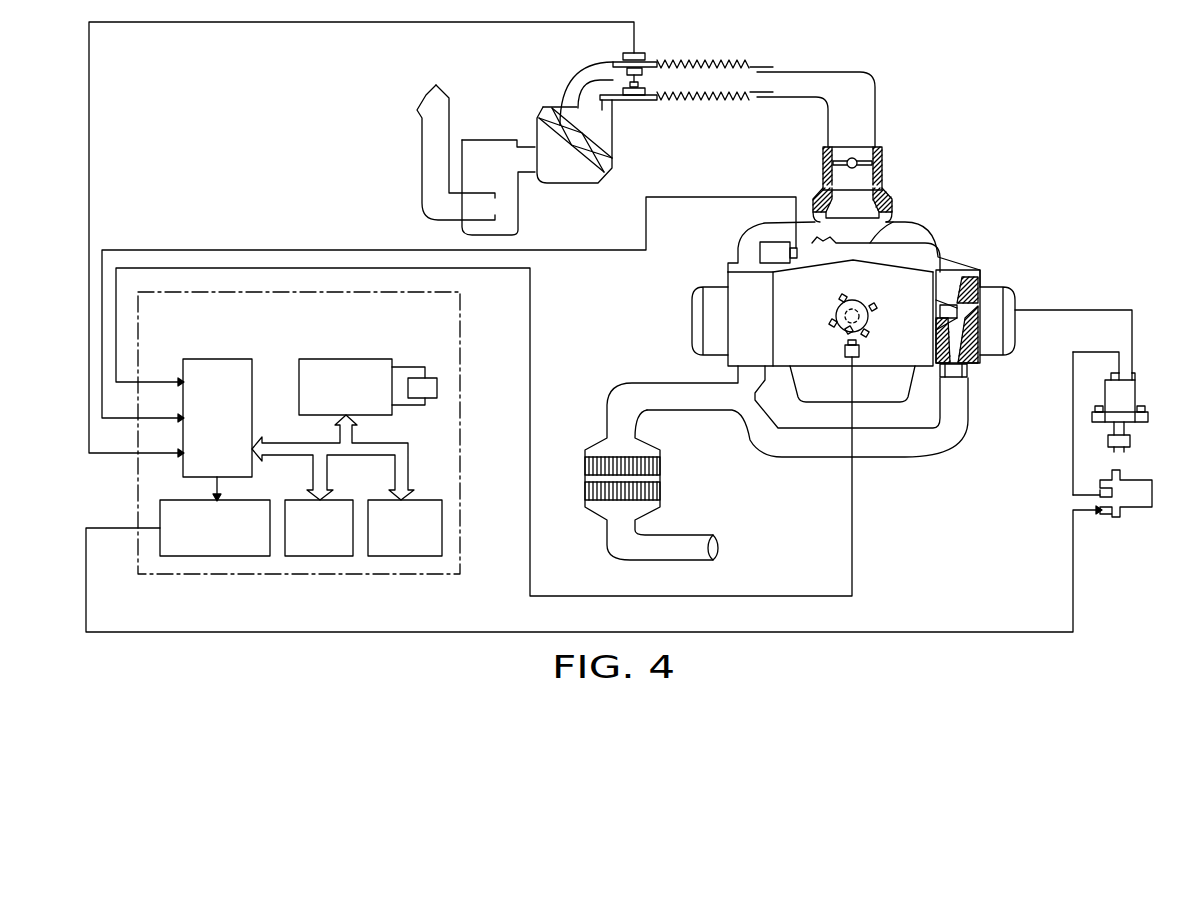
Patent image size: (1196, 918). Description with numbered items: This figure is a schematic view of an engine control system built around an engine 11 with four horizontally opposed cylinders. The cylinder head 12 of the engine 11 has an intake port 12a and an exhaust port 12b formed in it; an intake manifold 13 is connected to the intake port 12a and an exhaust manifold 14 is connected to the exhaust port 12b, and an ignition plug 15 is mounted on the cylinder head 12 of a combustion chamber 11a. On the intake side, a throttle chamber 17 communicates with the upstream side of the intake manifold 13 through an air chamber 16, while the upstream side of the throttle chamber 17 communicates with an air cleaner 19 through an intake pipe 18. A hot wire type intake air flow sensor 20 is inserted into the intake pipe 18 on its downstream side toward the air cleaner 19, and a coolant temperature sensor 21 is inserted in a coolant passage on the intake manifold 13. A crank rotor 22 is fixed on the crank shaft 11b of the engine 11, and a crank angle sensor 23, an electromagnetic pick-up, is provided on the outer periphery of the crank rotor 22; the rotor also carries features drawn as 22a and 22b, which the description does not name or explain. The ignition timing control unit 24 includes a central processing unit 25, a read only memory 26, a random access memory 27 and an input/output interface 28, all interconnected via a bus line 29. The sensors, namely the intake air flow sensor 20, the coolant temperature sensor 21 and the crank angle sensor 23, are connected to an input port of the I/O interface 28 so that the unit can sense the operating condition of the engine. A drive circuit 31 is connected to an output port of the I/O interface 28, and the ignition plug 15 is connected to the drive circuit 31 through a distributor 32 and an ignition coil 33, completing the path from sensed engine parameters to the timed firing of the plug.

The engine 11 is at (977, 381).
The combustion chamber 11a is at (935, 325).
The crank shaft 11b is at (831, 323).
The cylinder head 12 is at (730, 352).
The intake port 12a is at (952, 278).
The exhaust port 12b is at (967, 362).
The intake manifold 13 is at (928, 231).
The exhaust manifold 14 is at (905, 460).
The ignition plug 15 is at (940, 314).
The air chamber 16 is at (873, 200).
The throttle chamber 17 is at (868, 173).
The intake pipe 18 is at (837, 72).
The air cleaner 19 is at (547, 110).
The intake air flow sensor 20 is at (642, 55).
The coolant temperature sensor 21 is at (798, 250).
The crank rotor 22 is at (838, 312).
The reference position detecting element 22a is at (843, 296).
The crank angle detecting element 22b is at (874, 305).
The crank angle sensor 23 is at (848, 357).
The ignition timing control unit 24 is at (462, 362).
The central processing unit 25 is at (299, 380).
The read only memory 26 is at (402, 556).
The random access memory 27 is at (322, 556).
The input/output interface 28 is at (203, 359).
The bus line 29 is at (412, 456).
The drive circuit 31 is at (218, 556).
The distributor 32 is at (1136, 390).
The ignition coil 33 is at (1138, 508).